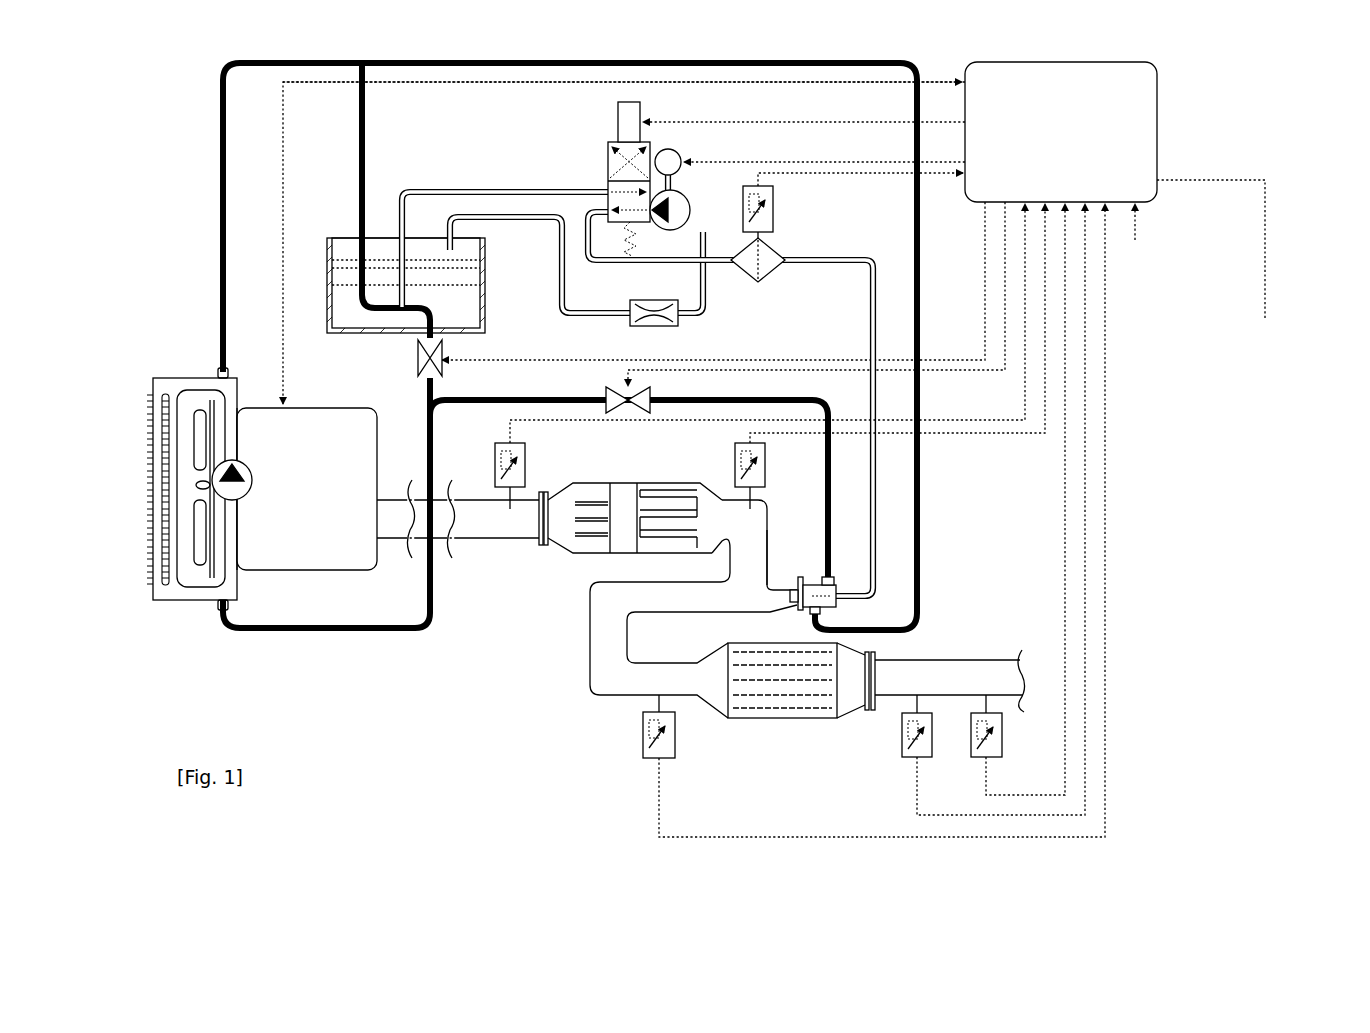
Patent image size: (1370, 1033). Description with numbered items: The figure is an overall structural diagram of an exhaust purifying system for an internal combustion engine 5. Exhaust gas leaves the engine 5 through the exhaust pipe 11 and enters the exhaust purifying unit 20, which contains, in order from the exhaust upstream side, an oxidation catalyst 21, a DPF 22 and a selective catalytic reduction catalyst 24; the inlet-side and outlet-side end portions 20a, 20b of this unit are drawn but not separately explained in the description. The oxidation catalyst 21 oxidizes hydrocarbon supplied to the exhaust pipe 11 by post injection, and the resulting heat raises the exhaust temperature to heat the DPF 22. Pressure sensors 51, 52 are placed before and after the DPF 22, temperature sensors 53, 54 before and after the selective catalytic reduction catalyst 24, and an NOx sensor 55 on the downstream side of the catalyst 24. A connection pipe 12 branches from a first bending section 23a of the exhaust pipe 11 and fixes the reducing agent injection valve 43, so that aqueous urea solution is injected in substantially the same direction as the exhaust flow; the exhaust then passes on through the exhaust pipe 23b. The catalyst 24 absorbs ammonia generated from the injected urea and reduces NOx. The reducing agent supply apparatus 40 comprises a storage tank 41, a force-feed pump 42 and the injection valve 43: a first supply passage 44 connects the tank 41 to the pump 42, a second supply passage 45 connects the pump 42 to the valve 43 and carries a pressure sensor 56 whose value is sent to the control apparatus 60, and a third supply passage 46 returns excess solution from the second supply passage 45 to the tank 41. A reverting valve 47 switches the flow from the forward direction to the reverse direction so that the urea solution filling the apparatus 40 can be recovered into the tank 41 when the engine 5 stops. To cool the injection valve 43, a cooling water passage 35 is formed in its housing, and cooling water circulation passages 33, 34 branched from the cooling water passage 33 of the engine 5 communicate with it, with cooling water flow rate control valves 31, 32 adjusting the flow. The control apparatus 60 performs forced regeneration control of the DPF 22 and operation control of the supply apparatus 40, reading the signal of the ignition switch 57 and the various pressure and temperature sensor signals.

The internal combustion engine 5 is at (307, 489).
The exhaust pipe 11 is at (503, 543).
The connection pipe 12 is at (777, 580).
The exhaust purifying unit 20 is at (588, 560).
The inlet flange 20a is at (535, 552).
The outlet flange 20b is at (875, 713).
The oxidation catalyst 21 is at (586, 495).
The DPF 22 is at (656, 503).
The first bending section 23a is at (774, 532).
The exhaust pipe 23b is at (575, 630).
The selective catalytic reduction catalyst 24 is at (793, 703).
The cooling water flow rate control valve 31 is at (426, 358).
The cooling water flow rate control valve 32 is at (648, 393).
The cooling water passage 33 is at (305, 632).
The cooling water circulation passage 34 is at (458, 396).
The cooling water passage 35 is at (818, 595).
The reducing agent supply apparatus 40 is at (533, 155).
The storage tank 41 is at (483, 293).
The force-feed pump 42 is at (690, 210).
The reducing agent injection valve 43 is at (815, 582).
The first supply passage 44 is at (530, 180).
The second supply passage 45 is at (870, 305).
The third supply passage 46 is at (447, 235).
The reverting valve 47 is at (612, 165).
The pressure sensor 51 is at (494, 485).
The pressure sensor 52 is at (732, 468).
The temperature sensor 53 is at (674, 735).
The temperature sensor 54 is at (933, 733).
The NOx sensor 55 is at (1002, 733).
The pressure sensor 56 is at (776, 203).
The ignition switch 57 is at (1227, 268).
The control apparatus 60 is at (1087, 179).